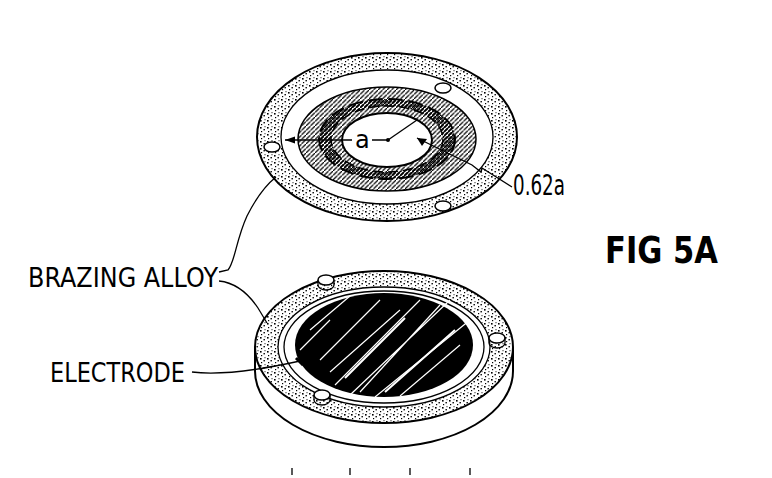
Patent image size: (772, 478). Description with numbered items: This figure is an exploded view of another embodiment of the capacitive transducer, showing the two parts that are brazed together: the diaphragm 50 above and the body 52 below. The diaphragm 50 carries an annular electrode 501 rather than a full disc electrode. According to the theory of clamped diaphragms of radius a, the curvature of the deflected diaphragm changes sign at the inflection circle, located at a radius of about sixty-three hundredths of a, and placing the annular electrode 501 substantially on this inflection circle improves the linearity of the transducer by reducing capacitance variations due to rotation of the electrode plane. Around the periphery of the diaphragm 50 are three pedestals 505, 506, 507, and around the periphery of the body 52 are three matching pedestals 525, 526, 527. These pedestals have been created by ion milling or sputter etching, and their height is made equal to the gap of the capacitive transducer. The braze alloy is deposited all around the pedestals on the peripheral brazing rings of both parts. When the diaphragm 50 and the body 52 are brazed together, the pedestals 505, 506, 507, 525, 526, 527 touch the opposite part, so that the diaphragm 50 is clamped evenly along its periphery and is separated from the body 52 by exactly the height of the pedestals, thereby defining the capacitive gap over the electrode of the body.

The diaphragm 50 is at (497, 78).
The annular electrode 501 is at (328, 186).
The pedestal 505 is at (450, 209).
The pedestal 506 is at (448, 84).
The pedestal 507 is at (264, 144).
The body 52 is at (264, 403).
The pedestal 525 is at (318, 402).
The pedestal 526 is at (510, 330).
The pedestal 527 is at (330, 276).